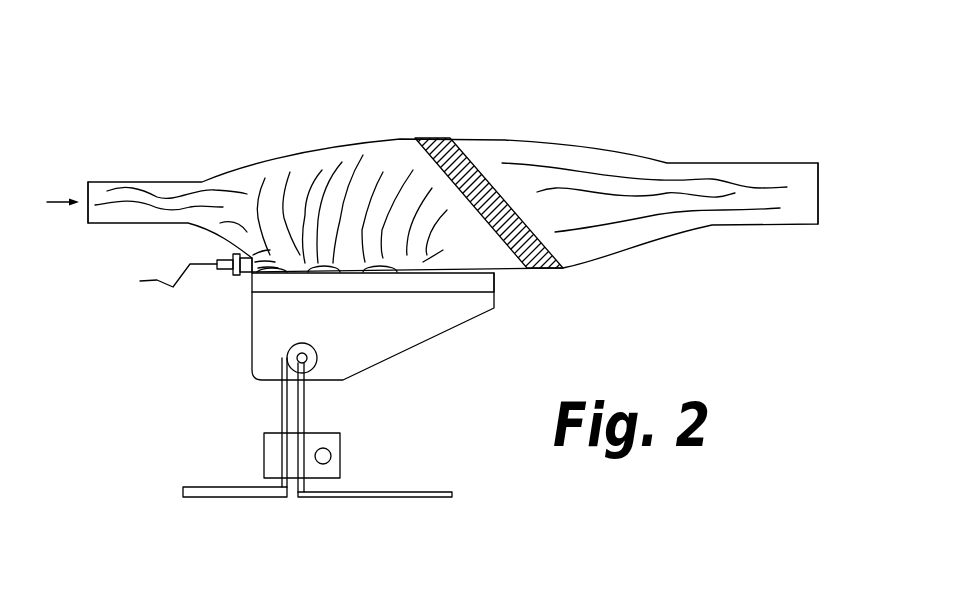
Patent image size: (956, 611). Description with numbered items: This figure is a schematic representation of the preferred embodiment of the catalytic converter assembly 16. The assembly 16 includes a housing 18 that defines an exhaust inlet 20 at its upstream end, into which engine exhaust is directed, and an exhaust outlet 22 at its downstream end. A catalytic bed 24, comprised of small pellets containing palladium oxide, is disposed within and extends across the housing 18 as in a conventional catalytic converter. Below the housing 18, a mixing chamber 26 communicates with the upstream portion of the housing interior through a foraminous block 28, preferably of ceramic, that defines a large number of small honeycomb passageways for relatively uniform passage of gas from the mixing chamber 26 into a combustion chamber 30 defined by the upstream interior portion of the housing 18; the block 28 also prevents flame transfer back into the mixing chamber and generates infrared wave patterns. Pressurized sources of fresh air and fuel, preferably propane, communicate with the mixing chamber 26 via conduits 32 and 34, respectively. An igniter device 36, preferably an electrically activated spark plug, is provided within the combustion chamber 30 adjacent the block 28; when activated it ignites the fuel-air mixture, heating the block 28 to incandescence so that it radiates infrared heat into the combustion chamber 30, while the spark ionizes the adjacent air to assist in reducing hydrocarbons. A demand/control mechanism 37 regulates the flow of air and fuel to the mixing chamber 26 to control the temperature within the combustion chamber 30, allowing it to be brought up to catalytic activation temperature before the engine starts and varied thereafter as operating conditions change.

The catalytic converter assembly 16 is at (531, 127).
The housing 18 is at (347, 138).
The exhaust inlet 20 is at (88, 212).
The exhaust outlet 22 is at (818, 207).
The catalytic bed 24 is at (467, 163).
The mixing chamber 26 is at (387, 345).
The foraminous block 28 is at (484, 282).
The combustion chamber 30 is at (333, 212).
The air conduit 32 is at (227, 490).
The fuel conduit 34 is at (390, 497).
The igniter device 36 is at (227, 272).
The demand/control mechanism 37 is at (340, 450).